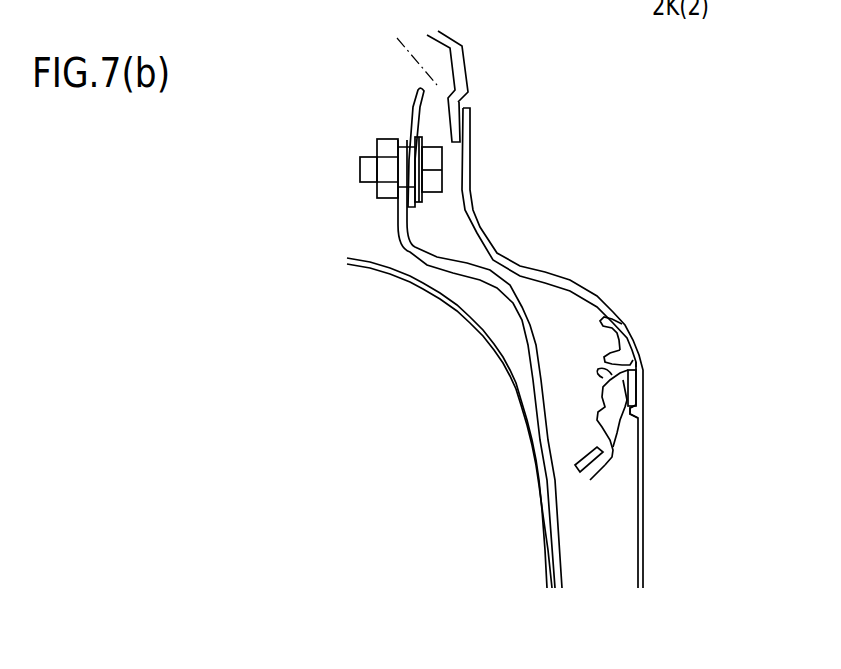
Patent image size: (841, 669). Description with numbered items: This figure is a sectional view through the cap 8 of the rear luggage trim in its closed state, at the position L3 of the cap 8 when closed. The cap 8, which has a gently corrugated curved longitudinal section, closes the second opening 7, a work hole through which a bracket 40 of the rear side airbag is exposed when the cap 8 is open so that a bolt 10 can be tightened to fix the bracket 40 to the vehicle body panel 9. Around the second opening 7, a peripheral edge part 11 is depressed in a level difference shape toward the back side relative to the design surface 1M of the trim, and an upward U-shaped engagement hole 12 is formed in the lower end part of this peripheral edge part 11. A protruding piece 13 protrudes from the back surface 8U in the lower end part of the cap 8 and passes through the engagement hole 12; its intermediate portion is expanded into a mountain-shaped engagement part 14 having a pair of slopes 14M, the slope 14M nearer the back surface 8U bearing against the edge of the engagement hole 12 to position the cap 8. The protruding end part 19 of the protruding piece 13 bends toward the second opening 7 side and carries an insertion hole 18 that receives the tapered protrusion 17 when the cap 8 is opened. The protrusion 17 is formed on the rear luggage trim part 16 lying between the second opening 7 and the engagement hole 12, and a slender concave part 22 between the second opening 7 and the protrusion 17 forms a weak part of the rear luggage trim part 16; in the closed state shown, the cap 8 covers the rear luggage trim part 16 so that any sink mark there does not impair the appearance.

The position of the cap in the closed state L3 is at (404, 46).
The design surface 1M is at (468, 77).
The bracket 40 is at (405, 118).
The second opening 7 is at (460, 150).
The bolt 10 is at (442, 185).
The vehicle body panel 9 is at (400, 230).
The back surface of the cap 8U is at (475, 238).
The cap 8 is at (572, 227).
The rear luggage trim part 16 is at (623, 334).
The concave part 22 is at (600, 326).
The tapered protrusion 17 is at (603, 358).
The engagement part 14 is at (610, 393).
The slope of the engagement part 14M is at (636, 367).
The engagement hole 12 is at (639, 385).
The peripheral edge part 11 is at (642, 403).
The protruding piece 13 is at (587, 422).
The insertion hole 18 is at (602, 462).
The protruding end part 19 is at (577, 467).